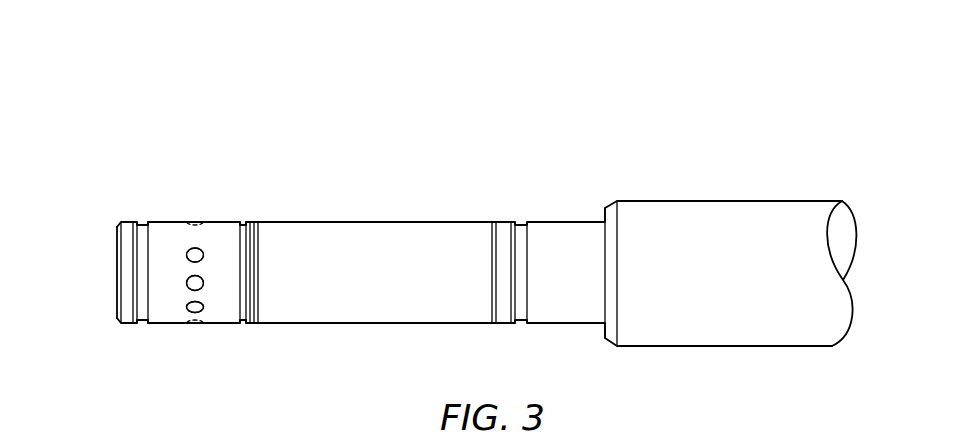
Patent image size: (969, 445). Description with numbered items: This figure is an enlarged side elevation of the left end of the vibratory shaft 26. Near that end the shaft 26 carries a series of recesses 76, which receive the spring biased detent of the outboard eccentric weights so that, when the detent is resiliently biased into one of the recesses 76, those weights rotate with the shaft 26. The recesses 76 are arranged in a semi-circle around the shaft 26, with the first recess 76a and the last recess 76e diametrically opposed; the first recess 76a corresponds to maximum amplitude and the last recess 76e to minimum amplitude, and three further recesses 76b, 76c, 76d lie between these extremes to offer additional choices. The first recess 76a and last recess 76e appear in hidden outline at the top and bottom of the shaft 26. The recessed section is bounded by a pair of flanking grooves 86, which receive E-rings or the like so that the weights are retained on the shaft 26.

The shaft 26 is at (383, 222).
The recesses 76 is at (209, 250).
The first recess 76a is at (197, 221).
The recess 76b is at (186, 255).
The recess 76c is at (186, 283).
The recess 76d is at (187, 308).
The last recess 76e is at (197, 324).
The flanking grooves 86 is at (141, 223).